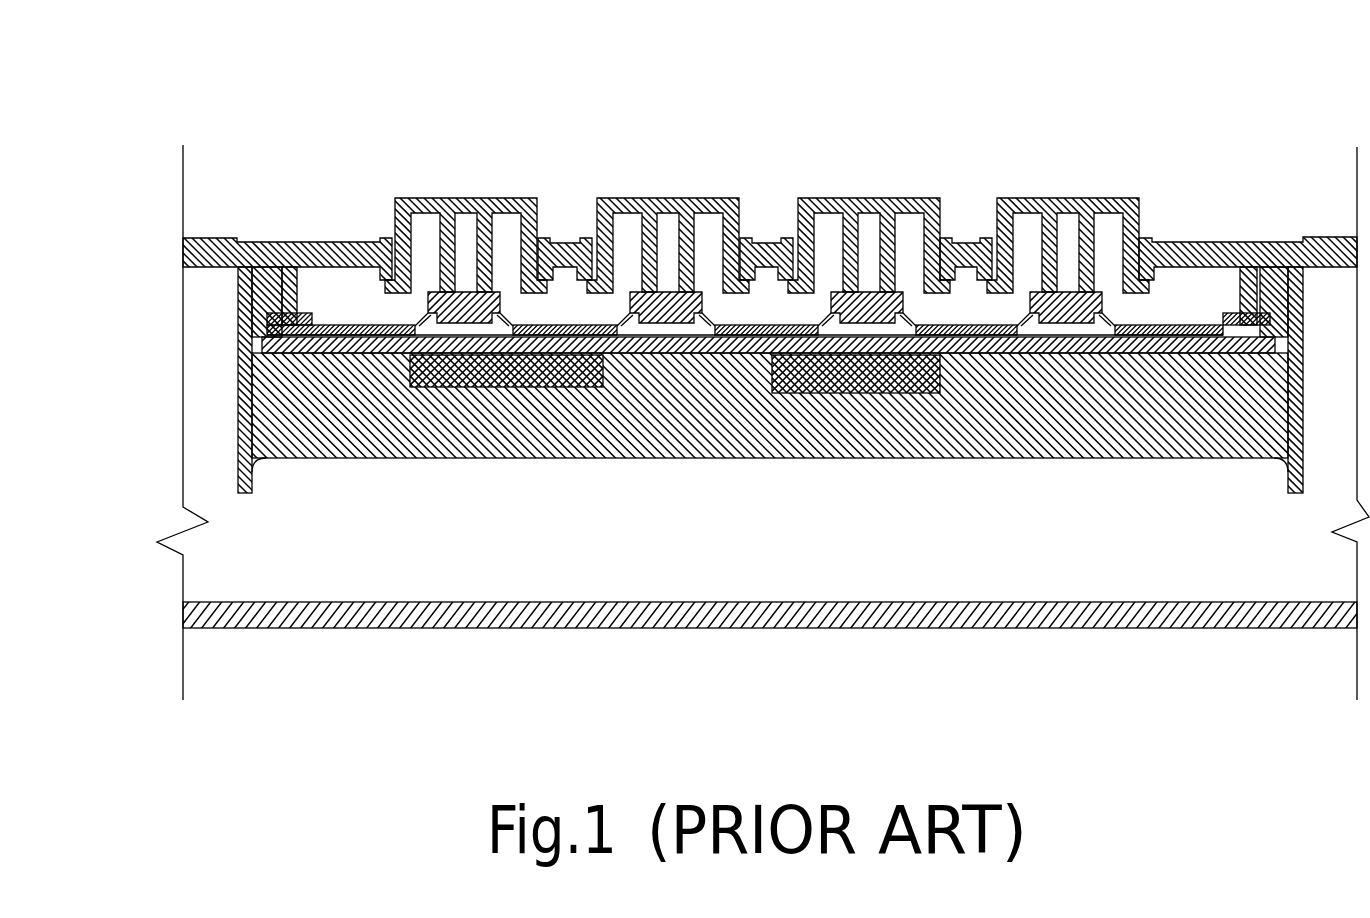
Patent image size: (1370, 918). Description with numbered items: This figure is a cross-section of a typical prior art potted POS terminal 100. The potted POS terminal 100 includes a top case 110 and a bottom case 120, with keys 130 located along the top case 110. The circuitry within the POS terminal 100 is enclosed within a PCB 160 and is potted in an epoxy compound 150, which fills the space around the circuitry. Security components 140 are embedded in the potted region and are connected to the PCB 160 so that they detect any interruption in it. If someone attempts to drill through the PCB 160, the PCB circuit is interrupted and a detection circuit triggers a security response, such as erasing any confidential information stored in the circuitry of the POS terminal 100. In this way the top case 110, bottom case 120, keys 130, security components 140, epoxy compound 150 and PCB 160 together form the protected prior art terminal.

The potted POS terminal 100 is at (100, 202).
The top case 110 is at (270, 243).
The bottom case 120 is at (448, 632).
The keys 130 is at (1037, 198).
The security components 140 is at (548, 390).
The epoxy compound 150 is at (477, 430).
The PCB 160 is at (1180, 343).